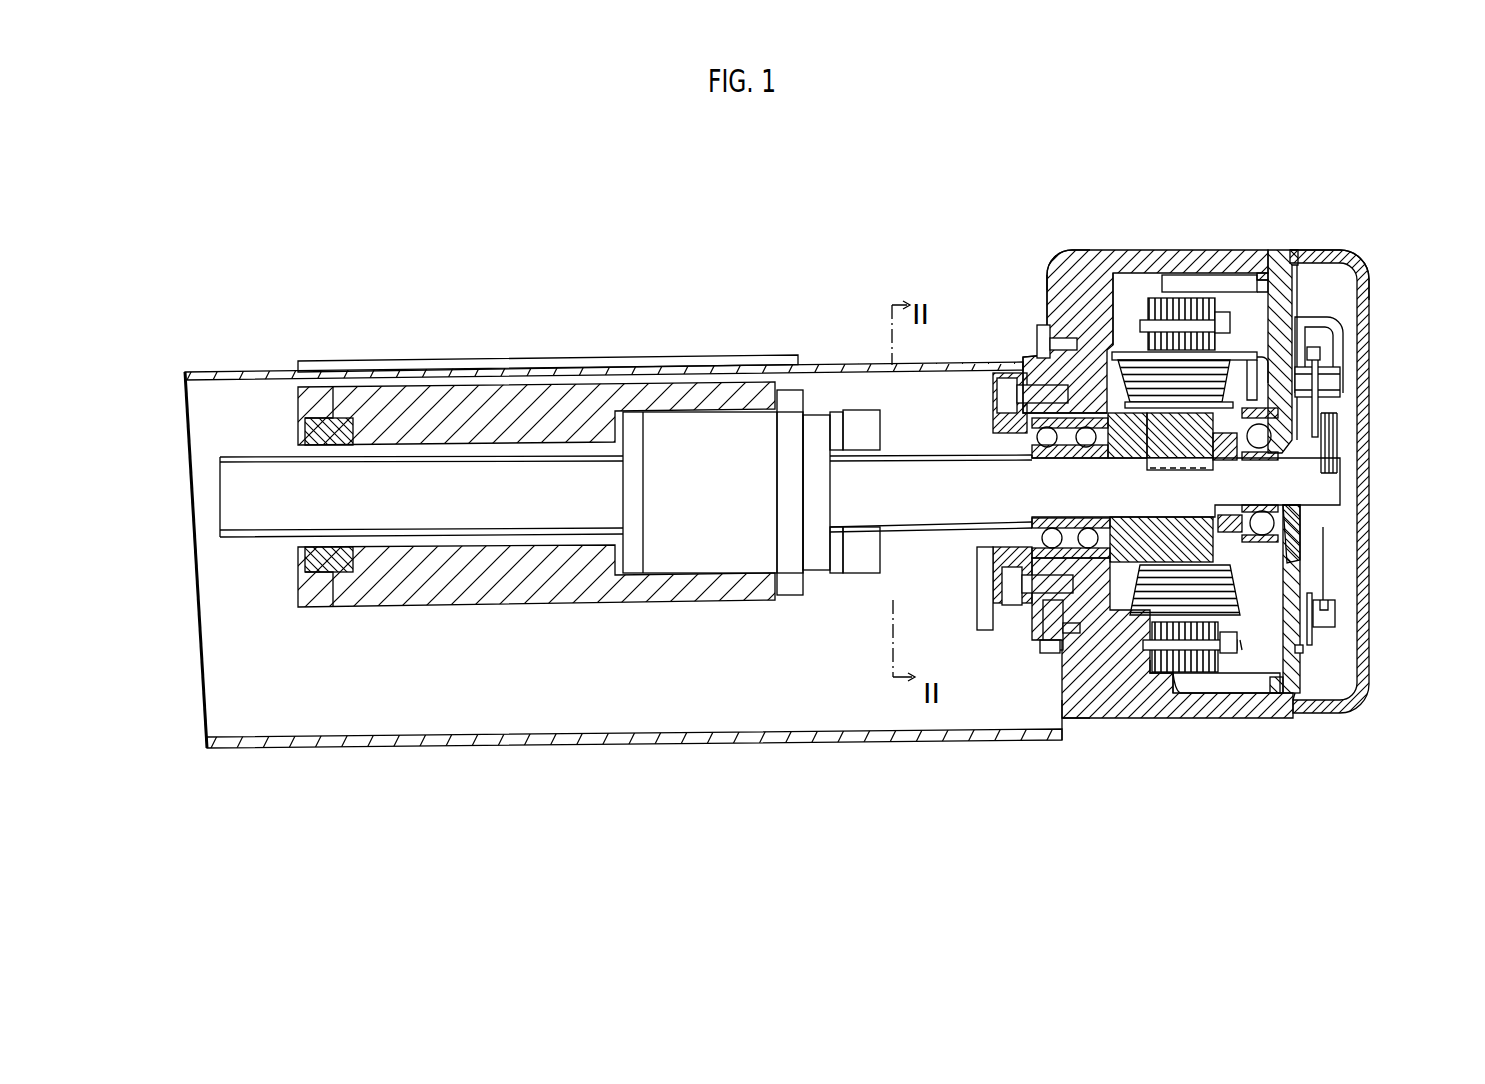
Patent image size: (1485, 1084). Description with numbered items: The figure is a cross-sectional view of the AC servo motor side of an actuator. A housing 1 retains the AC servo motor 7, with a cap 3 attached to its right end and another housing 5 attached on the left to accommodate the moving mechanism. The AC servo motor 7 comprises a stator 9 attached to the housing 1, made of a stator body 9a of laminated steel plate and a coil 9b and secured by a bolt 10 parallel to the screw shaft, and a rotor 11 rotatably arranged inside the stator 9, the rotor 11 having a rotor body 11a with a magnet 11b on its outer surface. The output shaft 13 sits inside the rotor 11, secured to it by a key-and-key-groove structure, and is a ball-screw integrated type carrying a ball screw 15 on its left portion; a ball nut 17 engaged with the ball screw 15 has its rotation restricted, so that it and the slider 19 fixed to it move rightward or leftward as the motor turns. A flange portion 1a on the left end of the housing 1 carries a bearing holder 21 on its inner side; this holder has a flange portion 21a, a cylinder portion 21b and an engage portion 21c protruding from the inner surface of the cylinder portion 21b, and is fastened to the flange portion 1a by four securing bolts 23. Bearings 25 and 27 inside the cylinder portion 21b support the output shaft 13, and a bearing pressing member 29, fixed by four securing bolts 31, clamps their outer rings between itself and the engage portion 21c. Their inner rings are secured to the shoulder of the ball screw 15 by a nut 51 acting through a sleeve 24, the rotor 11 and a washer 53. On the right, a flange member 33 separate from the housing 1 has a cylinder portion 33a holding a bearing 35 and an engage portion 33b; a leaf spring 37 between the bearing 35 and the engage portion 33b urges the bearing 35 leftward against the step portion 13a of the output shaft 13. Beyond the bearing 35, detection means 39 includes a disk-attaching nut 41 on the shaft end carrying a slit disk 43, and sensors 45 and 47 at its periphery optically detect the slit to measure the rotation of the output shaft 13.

The housing 1 is at (1115, 280).
The flange portion 1a is at (1068, 258).
The end cover 3 is at (1362, 420).
The housing 5 is at (846, 745).
The AC servo motor 7 is at (1258, 270).
The stator 9 is at (1195, 495).
The stator body 9a is at (1185, 330).
The coil 9b is at (1174, 675).
The bolt 10 is at (1244, 361).
The rotor 11 is at (1160, 672).
The rotor body 11a is at (1060, 723).
The magnet 11b is at (1148, 700).
The output shaft 13 is at (1338, 653).
The step portion 13a is at (1300, 617).
The ball screw 15 is at (907, 447).
The ball nut 17 is at (747, 567).
The slider 19 is at (497, 388).
The bearing holder 21 is at (1030, 360).
The flange portion 21a is at (1048, 323).
The cylinder portion 21b is at (1085, 300).
The engage portion 21c is at (1140, 335).
The securing bolt 23 is at (1037, 328).
The sleeve 24 is at (1185, 300).
The bearing 25 is at (983, 598).
The bearing 27 is at (1045, 637).
The bearing pressing member 29 is at (993, 558).
The securing bolt 31 is at (997, 403).
The flange member 33 is at (1325, 600).
The cylinder portion 33a is at (1297, 320).
The engage portion 33b is at (1292, 545).
The bearing 35 is at (1310, 453).
The leaf spring 37 is at (1305, 587).
The detection means 39 is at (1343, 396).
The disk-attaching nut 41 is at (1325, 512).
The disk 43 is at (1333, 330).
The sensor 45 is at (1357, 280).
The sensor 47 is at (1337, 620).
The nut 51 is at (1295, 695).
The washer 53 is at (1240, 640).